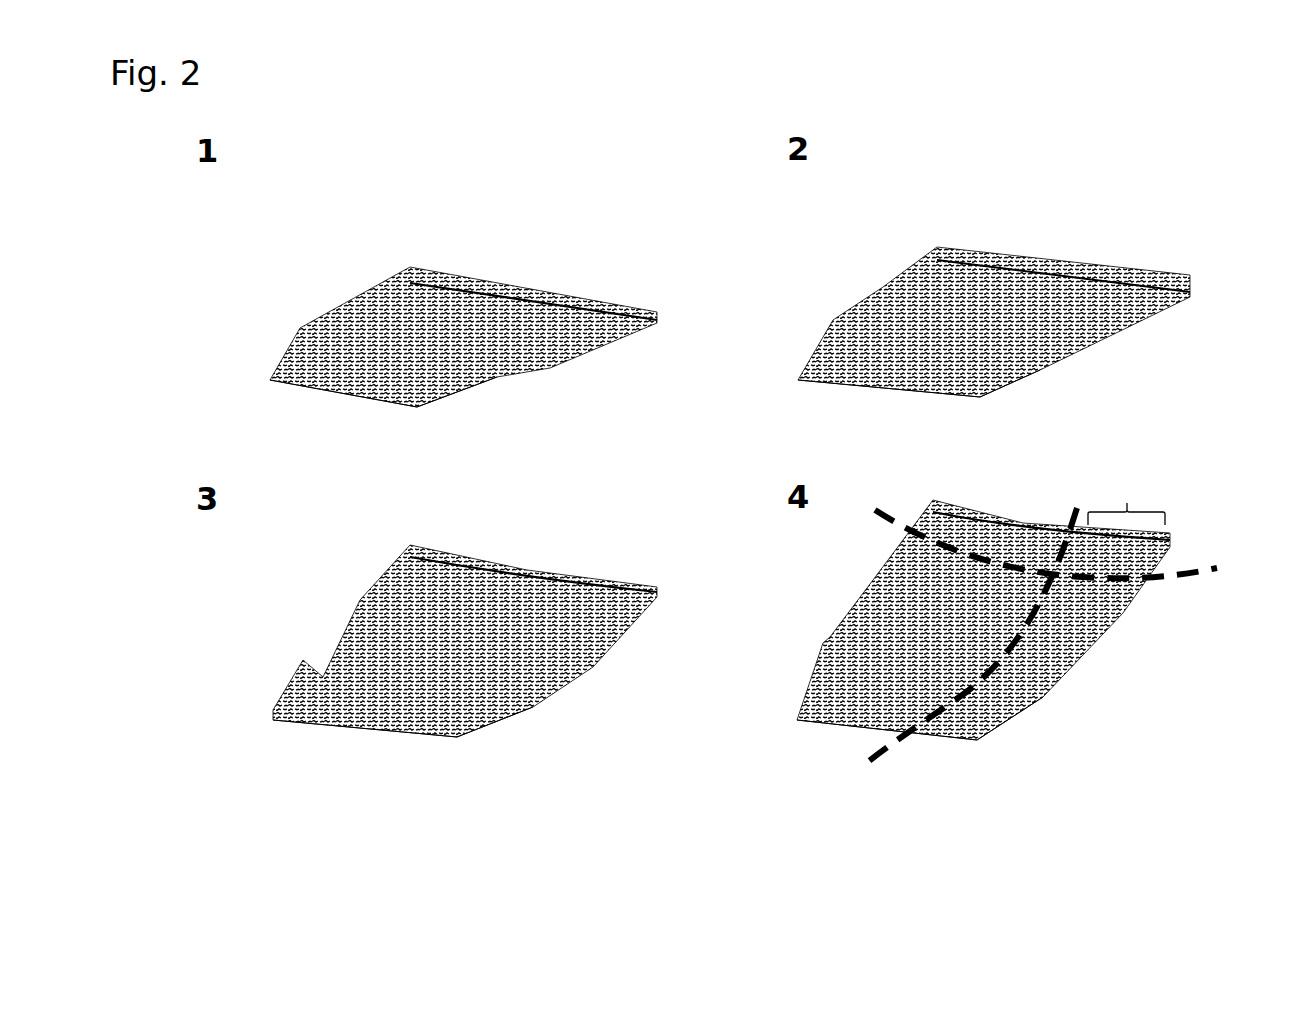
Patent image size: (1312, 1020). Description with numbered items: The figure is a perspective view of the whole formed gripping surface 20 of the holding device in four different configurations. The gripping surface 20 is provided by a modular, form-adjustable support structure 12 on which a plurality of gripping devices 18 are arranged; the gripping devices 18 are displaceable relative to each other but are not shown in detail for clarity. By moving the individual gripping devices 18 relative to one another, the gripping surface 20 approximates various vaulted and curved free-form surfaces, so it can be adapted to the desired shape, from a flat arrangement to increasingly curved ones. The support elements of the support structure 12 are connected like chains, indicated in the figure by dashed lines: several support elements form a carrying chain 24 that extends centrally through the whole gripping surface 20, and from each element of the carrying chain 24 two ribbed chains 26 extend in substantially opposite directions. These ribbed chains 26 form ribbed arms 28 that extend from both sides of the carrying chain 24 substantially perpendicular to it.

The support structure 12 is at (412, 230).
The gripping devices 18 is at (558, 366).
The gripping surface 20 is at (511, 405).
The carrying chain 24 is at (868, 767).
The ribbed chain 26 is at (1178, 578).
The ribbed arms 28 is at (1130, 498).